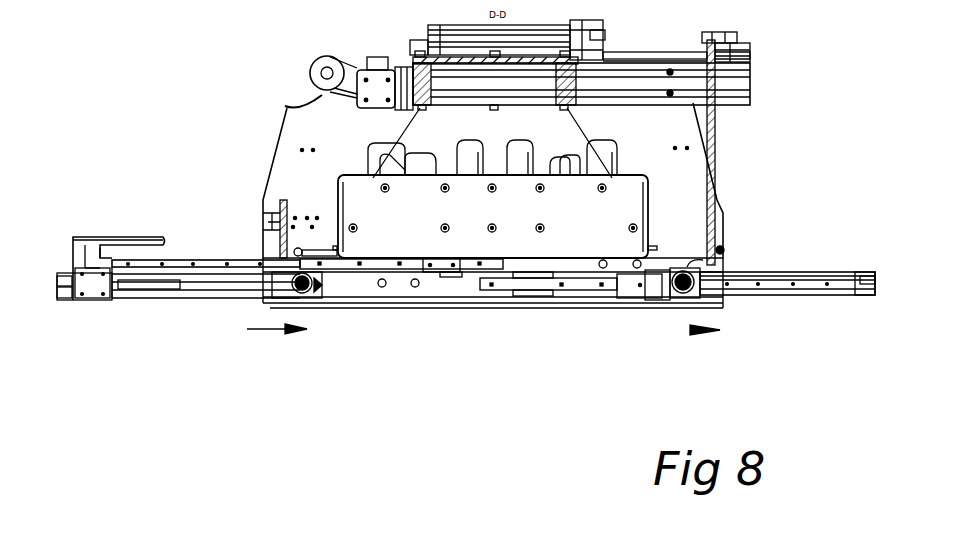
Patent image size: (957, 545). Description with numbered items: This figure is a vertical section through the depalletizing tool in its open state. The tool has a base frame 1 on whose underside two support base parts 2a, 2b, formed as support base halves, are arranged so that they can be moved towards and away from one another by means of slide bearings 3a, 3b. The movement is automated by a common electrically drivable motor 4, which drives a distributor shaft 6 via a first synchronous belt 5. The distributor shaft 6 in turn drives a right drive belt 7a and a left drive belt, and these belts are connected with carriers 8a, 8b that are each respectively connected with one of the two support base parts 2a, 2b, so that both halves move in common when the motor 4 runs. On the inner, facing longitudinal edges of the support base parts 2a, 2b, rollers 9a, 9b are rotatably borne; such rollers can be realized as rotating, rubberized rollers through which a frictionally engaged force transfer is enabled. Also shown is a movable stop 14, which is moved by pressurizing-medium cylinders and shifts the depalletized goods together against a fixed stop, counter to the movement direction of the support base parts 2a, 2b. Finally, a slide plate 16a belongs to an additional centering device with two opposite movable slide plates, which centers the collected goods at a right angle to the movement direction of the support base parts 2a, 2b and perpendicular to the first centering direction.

The base frame 1 is at (100, 163).
The support base part 2a is at (782, 280).
The support base part 2b is at (187, 268).
The slide bearing 3a is at (500, 283).
The slide bearing 3b is at (403, 265).
The motor 4 is at (377, 83).
The first synchronous belt 5 is at (285, 106).
The distributor shaft 6 is at (322, 70).
The right drive belt 7a is at (440, 302).
The carrier 8a is at (630, 292).
The carrier 8b is at (440, 267).
The roller 9a is at (677, 300).
The roller 9b is at (307, 297).
The movable stop 14 is at (717, 200).
The slide plate 16a is at (627, 197).